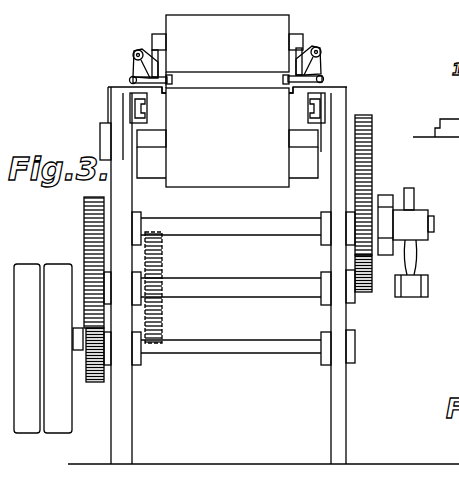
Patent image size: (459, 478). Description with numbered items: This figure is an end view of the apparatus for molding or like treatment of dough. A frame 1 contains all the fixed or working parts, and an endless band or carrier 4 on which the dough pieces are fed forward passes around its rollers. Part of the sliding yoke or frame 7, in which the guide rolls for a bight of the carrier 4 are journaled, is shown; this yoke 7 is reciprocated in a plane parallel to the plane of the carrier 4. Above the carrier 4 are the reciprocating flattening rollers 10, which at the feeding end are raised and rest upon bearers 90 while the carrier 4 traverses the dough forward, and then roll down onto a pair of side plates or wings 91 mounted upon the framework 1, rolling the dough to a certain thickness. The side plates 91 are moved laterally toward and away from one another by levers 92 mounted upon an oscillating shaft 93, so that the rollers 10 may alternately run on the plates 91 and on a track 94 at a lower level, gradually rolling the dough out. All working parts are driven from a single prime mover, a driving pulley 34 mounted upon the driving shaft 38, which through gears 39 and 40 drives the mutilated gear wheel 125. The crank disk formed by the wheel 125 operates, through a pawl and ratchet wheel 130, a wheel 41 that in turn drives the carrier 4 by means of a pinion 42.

The frame 1 is at (123, 186).
The endless band or carrier 4 is at (227, 137).
The sliding yoke or frame 7 is at (143, 112).
The reciprocating rollers 10 is at (227, 43).
The driving pulley 34 is at (60, 416).
The driving shaft 38 is at (271, 349).
The gear 39 is at (105, 373).
The gear 40 is at (83, 220).
The wheel 41 is at (362, 284).
The pinion 42 is at (372, 135).
The bearers 90 is at (170, 74).
The side plates or wings 91 is at (173, 80).
The levers 92 is at (132, 72).
The oscillating shaft 93 is at (141, 50).
The track 94 is at (168, 89).
The mutilated gear wheel 125 is at (162, 319).
The ratchet wheel 130 is at (382, 195).